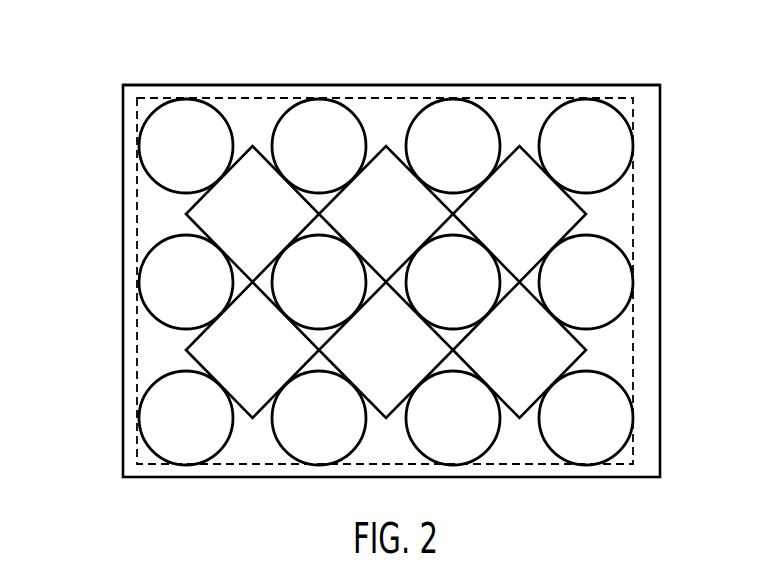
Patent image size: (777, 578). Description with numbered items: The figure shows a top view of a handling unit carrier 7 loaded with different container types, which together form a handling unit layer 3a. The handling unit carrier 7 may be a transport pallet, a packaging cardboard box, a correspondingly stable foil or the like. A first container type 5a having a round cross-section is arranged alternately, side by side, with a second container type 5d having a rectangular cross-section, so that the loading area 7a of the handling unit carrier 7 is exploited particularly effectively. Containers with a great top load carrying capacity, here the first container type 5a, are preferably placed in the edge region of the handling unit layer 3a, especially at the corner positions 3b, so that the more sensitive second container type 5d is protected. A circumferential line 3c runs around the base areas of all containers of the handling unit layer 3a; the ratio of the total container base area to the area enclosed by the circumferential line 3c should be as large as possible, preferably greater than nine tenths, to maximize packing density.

The handling unit layer 3a is at (378, 76).
The corner positions 3b is at (630, 72).
The circumferential line 3c is at (137, 213).
The first container type 5a is at (607, 125).
The second container type 5d is at (563, 210).
The handling unit carrier 7 is at (661, 322).
The loading area 7a is at (150, 340).